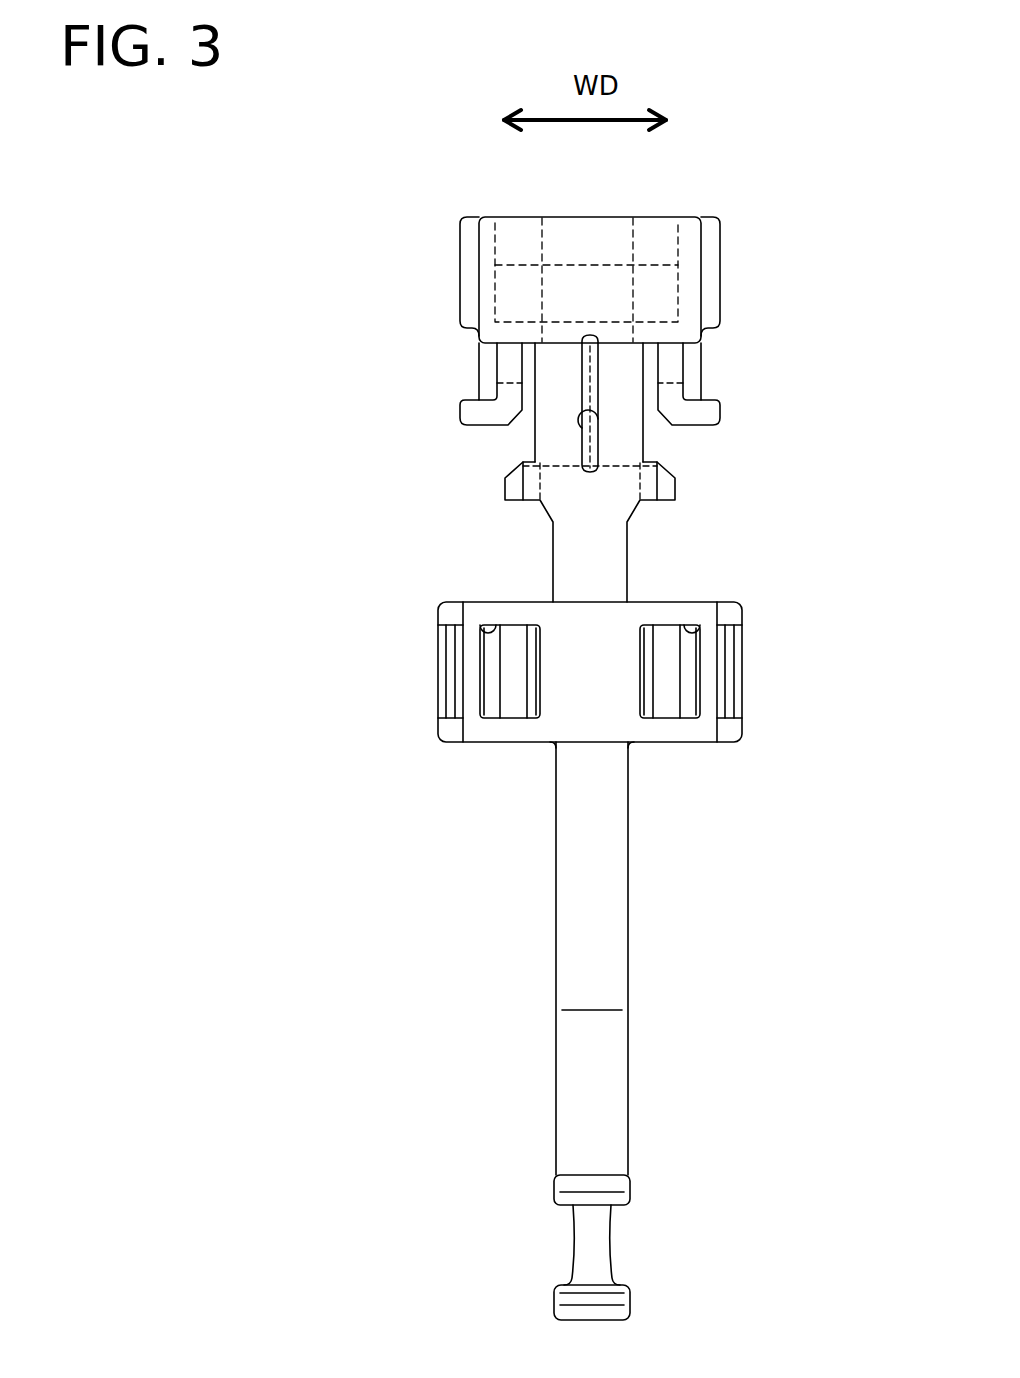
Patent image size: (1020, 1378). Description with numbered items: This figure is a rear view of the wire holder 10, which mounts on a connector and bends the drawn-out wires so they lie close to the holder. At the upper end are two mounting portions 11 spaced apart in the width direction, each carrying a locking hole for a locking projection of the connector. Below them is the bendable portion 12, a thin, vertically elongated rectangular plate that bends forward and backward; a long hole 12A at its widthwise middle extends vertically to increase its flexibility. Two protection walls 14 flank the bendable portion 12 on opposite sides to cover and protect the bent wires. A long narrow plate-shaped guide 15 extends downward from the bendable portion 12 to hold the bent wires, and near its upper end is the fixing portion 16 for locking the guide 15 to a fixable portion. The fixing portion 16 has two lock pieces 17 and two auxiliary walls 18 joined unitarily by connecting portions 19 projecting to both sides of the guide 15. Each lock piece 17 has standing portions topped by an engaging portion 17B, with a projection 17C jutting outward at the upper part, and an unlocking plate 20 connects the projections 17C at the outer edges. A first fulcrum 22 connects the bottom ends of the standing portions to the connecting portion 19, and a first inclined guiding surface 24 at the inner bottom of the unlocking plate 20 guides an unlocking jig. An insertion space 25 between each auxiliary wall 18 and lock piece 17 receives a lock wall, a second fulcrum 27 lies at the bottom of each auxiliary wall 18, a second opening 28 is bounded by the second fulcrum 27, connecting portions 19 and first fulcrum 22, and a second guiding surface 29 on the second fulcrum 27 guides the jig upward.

The wire holder 10 is at (282, 232).
The mounting portion 11 is at (465, 255).
The bendable portion 12 is at (614, 424).
The long hole 12A is at (578, 427).
The protection wall 14 is at (502, 367).
The guide 15 is at (613, 973).
The fixing portion 16 is at (593, 725).
The lock piece 17 is at (450, 608).
The engaging portion 17B is at (493, 697).
The projection 17C is at (446, 616).
The auxiliary wall 18 is at (528, 622).
The connecting portion 19 is at (493, 612).
The unlocking plate 20 is at (447, 655).
The first fulcrum 22 is at (470, 688).
The first inclined guiding surface 24 is at (453, 675).
The insertion space 25 is at (524, 676).
The second fulcrum 27 is at (535, 668).
The second opening 28 is at (466, 610).
The second guiding surface 29 is at (538, 690).